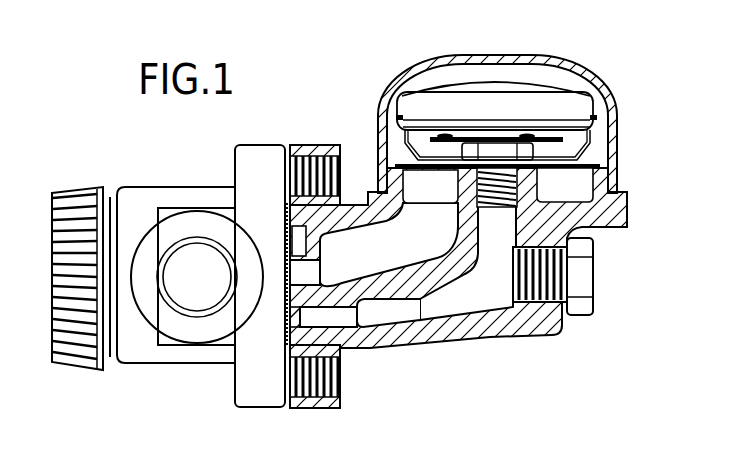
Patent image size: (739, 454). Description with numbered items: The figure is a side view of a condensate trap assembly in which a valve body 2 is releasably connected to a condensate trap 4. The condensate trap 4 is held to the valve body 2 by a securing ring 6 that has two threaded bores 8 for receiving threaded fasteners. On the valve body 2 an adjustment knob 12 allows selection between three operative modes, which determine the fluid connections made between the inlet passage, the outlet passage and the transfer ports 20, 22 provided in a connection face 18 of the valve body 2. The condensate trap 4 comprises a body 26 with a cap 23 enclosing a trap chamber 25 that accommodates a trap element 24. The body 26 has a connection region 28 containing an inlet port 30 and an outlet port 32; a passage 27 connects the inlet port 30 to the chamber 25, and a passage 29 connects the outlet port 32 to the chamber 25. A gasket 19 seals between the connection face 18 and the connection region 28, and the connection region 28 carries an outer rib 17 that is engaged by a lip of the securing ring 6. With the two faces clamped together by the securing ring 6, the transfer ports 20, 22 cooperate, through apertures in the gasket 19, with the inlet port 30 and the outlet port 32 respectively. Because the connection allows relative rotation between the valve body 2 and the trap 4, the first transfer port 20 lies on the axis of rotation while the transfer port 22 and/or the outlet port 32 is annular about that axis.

The valve body 2 is at (187, 186).
The condensate trap 4 is at (513, 112).
The securing ring 6 is at (328, 146).
The threaded bores 8 is at (341, 388).
The adjustment knob 12 is at (73, 192).
The outer rib 17 is at (356, 311).
The connection face 18 is at (267, 157).
The gasket 19 is at (285, 247).
The transfer port 20 is at (282, 279).
The transfer port 22 is at (281, 324).
The cap 23 is at (627, 120).
The trap element 24 is at (560, 88).
The trap chamber 25 is at (602, 104).
The body 26 is at (528, 330).
The passage 27 is at (398, 263).
The connection region 28 is at (308, 237).
The passage 29 is at (488, 304).
The inlet port 30 is at (318, 274).
The outlet port 32 is at (340, 317).